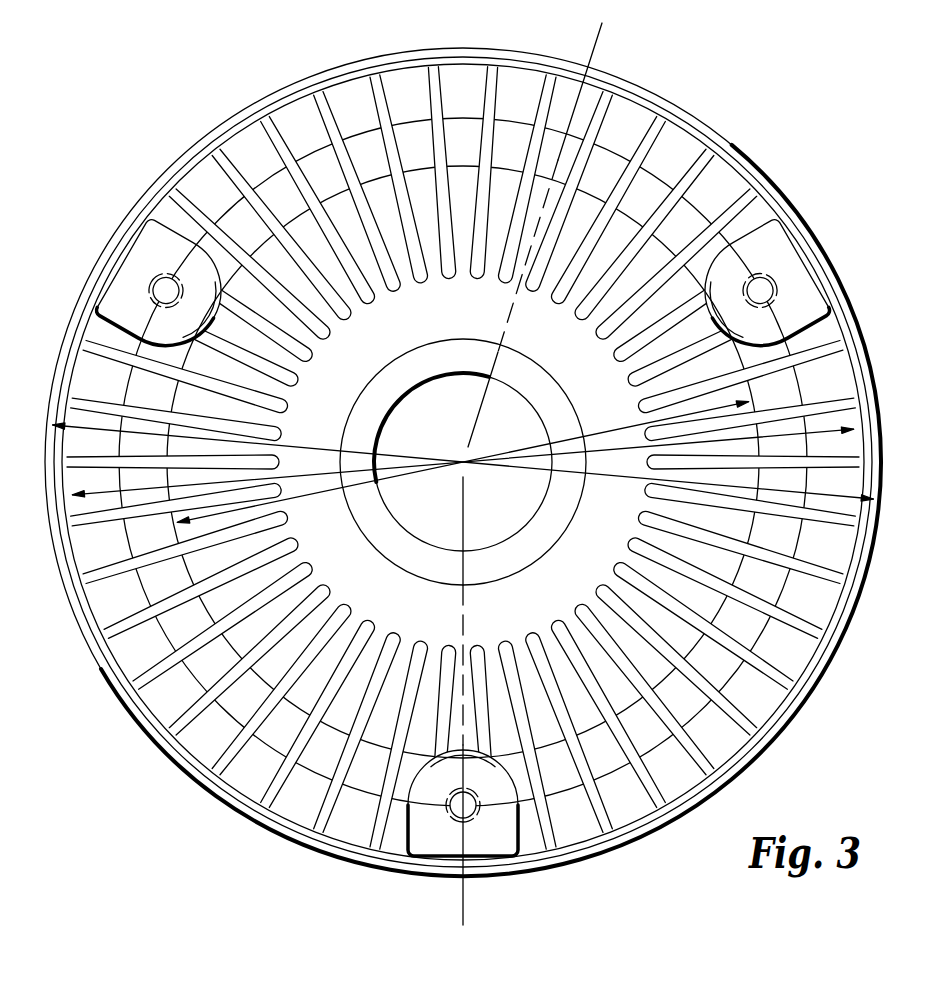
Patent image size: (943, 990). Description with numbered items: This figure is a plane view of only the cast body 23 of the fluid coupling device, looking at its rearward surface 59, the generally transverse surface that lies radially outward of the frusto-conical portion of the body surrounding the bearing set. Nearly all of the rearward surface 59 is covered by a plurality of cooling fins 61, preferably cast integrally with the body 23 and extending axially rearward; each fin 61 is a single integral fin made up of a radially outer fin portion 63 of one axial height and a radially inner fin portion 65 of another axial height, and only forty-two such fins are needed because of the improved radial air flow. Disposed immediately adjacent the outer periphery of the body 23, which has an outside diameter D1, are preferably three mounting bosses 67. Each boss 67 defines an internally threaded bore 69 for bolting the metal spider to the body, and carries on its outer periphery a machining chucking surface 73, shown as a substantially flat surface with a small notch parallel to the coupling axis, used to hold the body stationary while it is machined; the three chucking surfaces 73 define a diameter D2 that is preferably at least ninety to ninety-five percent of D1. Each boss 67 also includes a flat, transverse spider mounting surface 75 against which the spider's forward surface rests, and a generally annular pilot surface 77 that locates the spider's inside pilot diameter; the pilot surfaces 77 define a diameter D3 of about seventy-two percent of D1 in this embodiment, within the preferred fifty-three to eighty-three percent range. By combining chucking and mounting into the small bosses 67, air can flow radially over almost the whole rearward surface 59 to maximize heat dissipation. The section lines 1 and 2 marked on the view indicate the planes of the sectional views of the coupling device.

The body 23 is at (463, 462).
The rearward surface 59 is at (463, 462).
The cooling fins 61 is at (450, 463).
The radially outer fin portion 63 is at (463, 434).
The radially inner fin portion 65 is at (463, 462).
The mounting boss 67 is at (462, 514).
The internally threaded bore 69 is at (454, 505).
The machining chucking surface 73 is at (458, 577).
The spider mounting surface 75 is at (463, 469).
The pilot surface 77 is at (463, 500).
The section line 1- 1 is at (428, 701).
The section line 2- 2 is at (503, 225).
The outside diameter D1 is at (463, 462).
The chucking surface diameter D2 is at (462, 462).
The pilot surface diameter D3 is at (463, 461).